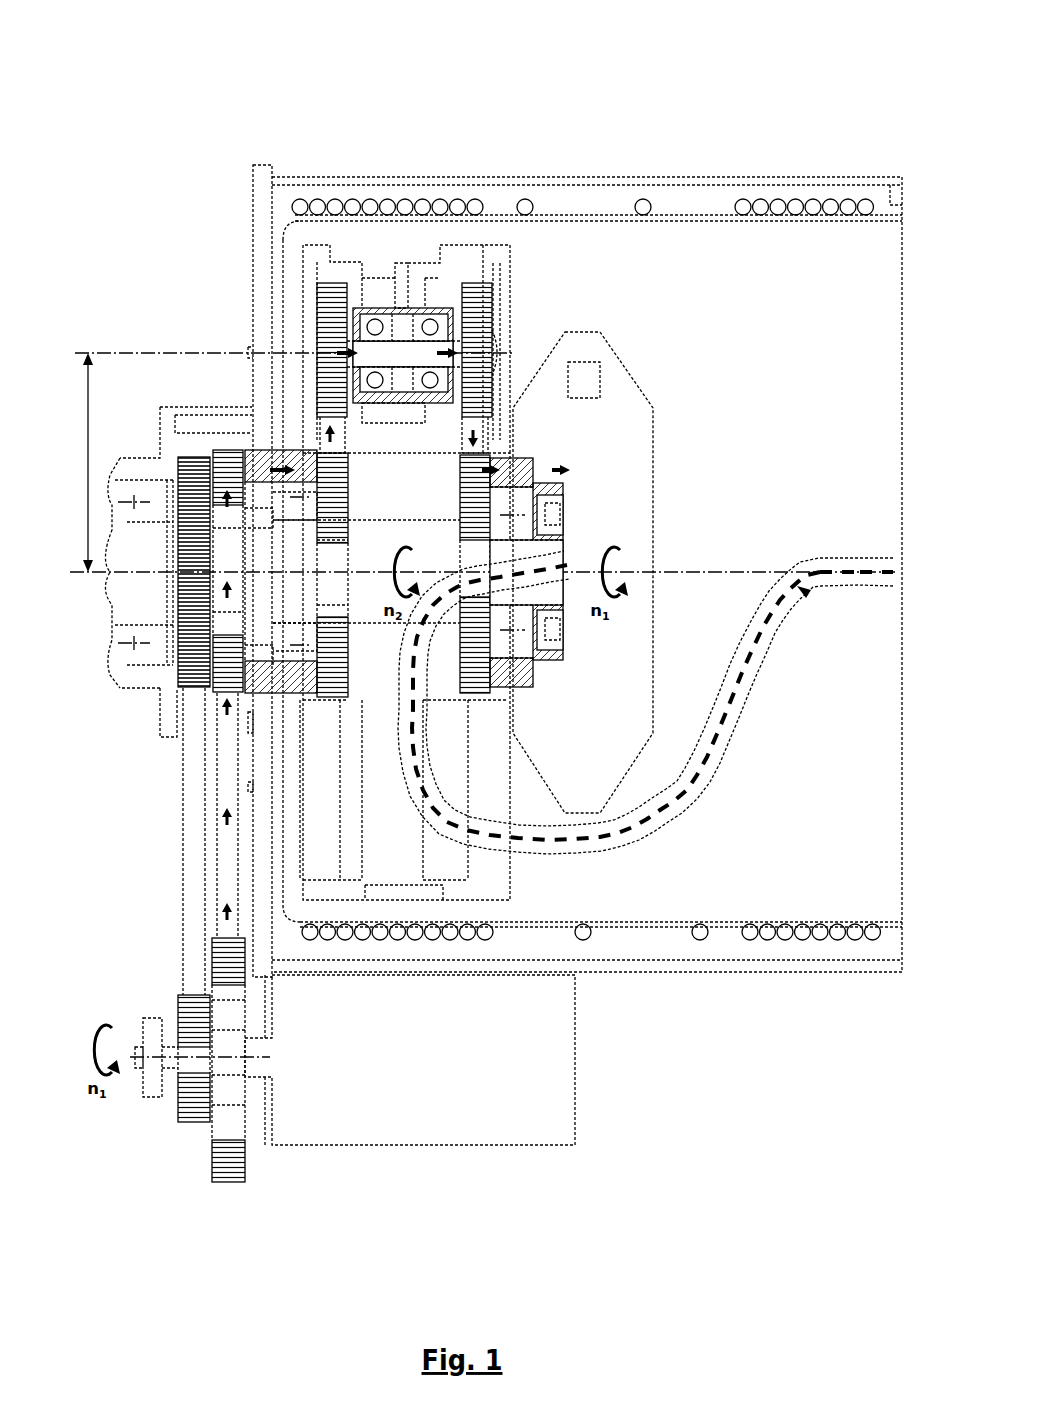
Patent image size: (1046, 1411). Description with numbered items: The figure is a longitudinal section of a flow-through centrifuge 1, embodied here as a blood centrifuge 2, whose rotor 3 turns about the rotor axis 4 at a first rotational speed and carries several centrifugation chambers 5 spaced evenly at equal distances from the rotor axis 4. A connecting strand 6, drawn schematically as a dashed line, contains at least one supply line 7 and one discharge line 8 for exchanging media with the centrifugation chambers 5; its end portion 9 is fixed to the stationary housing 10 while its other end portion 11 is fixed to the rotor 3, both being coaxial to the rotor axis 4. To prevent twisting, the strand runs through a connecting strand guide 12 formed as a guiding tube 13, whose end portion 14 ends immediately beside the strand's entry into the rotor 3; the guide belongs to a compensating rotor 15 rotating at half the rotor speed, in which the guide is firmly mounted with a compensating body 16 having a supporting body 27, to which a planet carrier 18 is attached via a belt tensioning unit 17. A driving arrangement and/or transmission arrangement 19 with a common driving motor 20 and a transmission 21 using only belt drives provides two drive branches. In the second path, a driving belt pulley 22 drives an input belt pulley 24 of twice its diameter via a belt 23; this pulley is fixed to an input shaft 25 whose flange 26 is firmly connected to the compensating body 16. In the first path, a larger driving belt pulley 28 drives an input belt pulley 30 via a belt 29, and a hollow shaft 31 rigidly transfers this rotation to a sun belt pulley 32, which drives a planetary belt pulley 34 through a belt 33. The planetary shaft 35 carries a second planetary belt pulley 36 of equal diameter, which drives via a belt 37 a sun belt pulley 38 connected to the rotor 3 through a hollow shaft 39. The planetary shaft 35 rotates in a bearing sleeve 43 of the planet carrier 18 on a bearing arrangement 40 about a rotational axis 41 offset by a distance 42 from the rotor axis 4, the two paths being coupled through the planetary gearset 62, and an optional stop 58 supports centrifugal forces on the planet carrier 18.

The flow-through centrifuge 1 is at (586, 475).
The blood centrifuge 2 is at (553, 142).
The rotor 3 is at (604, 438).
The rotor axis 4 is at (690, 565).
The centrifugation chambers 5 is at (584, 380).
The connecting strand 6 is at (802, 594).
The supply line 7 is at (835, 540).
The discharge line 8 is at (810, 567).
The end portion 9 is at (885, 567).
The stationary housing 10 is at (903, 383).
The end portion 11 is at (560, 575).
The connecting strand guide 12 is at (645, 702).
The guiding tube 13 is at (700, 772).
The end portion 14 is at (555, 572).
The compensating rotor 15 is at (498, 277).
The compensating body 16 is at (539, 347).
The belt tensioning unit 17 is at (375, 278).
The planet carrier 18 is at (468, 189).
The driving arrangement and/or transmission arrangement 19 is at (161, 571).
The driving motor 20 is at (410, 1060).
The transmission 21 is at (161, 571).
The driving belt pulley 22 is at (195, 1124).
The belt 23 is at (190, 878).
The input belt pulley 24 is at (177, 677).
The input shaft 25 is at (125, 583).
The flange 26 is at (345, 682).
The supporting body 27 is at (490, 264).
The driving belt pulley 28 is at (230, 1168).
The belt 29 is at (215, 848).
The input belt pulley 30 is at (227, 672).
The hollow shaft 31 is at (265, 440).
The sun belt pulley 32 is at (325, 500).
The belt 33 is at (335, 430).
The planetary belt pulley 34 is at (320, 318).
The planetary shaft 35 is at (437, 358).
The planetary belt pulley 36 is at (472, 318).
The belt 37 is at (468, 430).
The sun belt pulley 38 is at (463, 497).
The hollow shaft 39 is at (513, 667).
The bearing arrangement 40 is at (380, 296).
The rotational axis 41 is at (157, 354).
The distance 42 is at (88, 462).
The bearing sleeve 43 is at (428, 322).
The stop 58 is at (404, 298).
The planetary gearset 62 is at (210, 333).